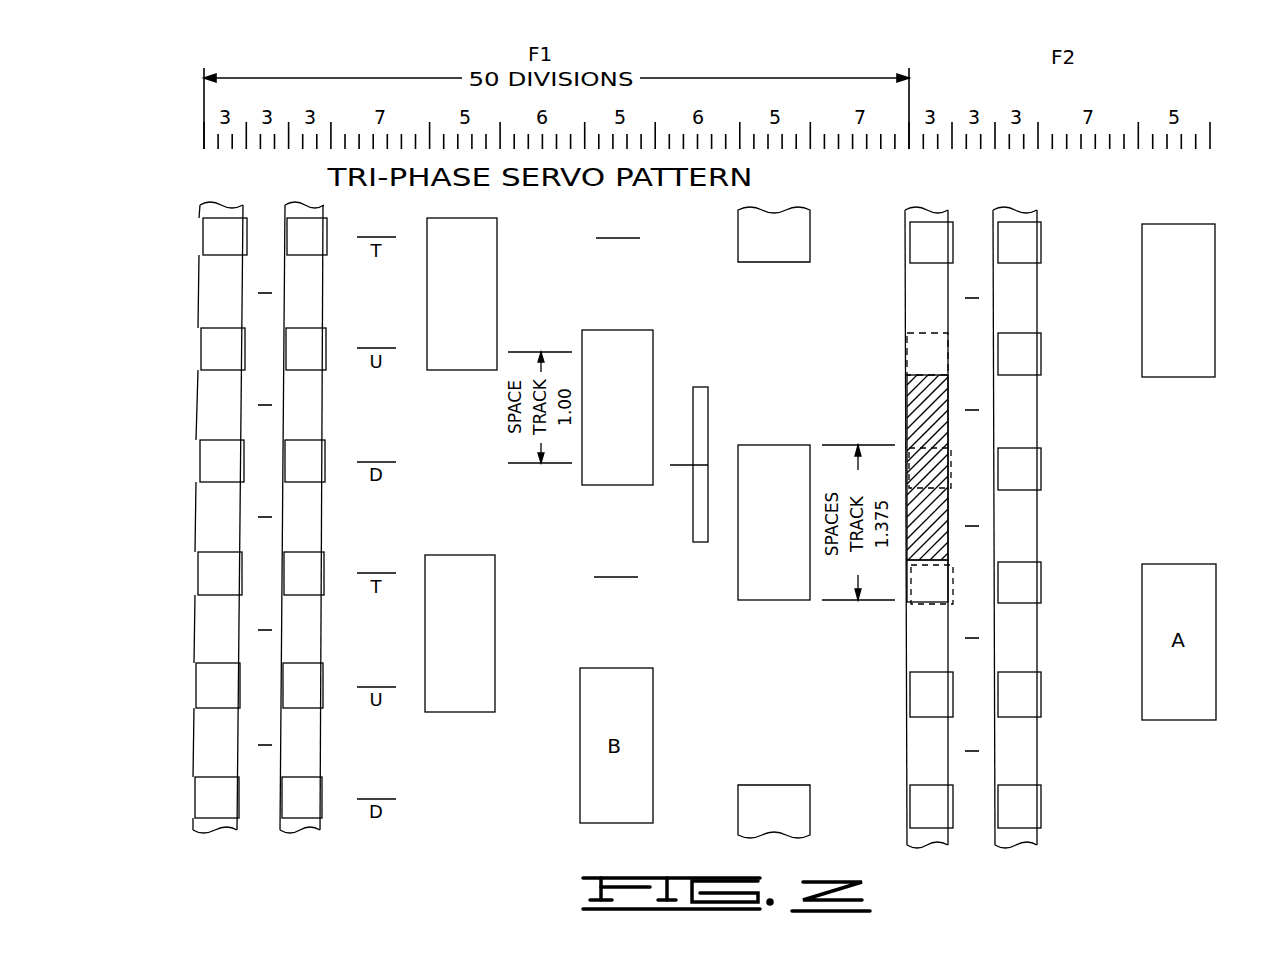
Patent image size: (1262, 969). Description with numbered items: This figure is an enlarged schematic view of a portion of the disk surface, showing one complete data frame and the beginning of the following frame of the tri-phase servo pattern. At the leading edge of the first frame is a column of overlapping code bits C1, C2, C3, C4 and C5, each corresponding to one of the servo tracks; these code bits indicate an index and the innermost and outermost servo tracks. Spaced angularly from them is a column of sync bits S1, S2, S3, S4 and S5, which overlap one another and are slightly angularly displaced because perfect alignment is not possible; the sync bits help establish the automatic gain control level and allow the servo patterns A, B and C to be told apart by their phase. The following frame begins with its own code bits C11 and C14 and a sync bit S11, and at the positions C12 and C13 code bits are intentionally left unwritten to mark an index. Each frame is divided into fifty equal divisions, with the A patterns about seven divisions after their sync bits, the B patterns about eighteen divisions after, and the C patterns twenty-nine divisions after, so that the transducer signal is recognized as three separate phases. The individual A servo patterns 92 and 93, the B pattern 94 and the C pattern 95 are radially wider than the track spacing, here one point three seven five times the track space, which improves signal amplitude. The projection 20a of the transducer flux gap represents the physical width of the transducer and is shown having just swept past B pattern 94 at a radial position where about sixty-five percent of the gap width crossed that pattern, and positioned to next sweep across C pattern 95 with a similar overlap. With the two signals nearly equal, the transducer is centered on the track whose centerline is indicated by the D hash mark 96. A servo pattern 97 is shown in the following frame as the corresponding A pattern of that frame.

The code bit C1 is at (221, 285).
The code bit C2 is at (220, 398).
The code bit C3 is at (218, 511).
The code bit C4 is at (217, 625).
The code bit C5 is at (216, 739).
The sync bit S1 is at (306, 296).
The sync bit S2 is at (305, 407).
The sync bit S3 is at (305, 524).
The sync bit S4 is at (305, 637).
The sync bit S5 is at (305, 753).
The code bit C11 is at (928, 291).
The code bit location C12 is at (928, 400).
The code bit location C13 is at (933, 512).
The code bit C14 is at (930, 642).
The sync bit S11 is at (1020, 286).
The A servo pattern 92 is at (478, 372).
The A servo pattern 93 is at (473, 553).
The B pattern 94 is at (610, 487).
The C pattern 95 is at (772, 602).
The D hash mark 96 is at (683, 467).
The servo burst A of second frame 97 is at (1193, 380).
The projection of the flux gap of the transducer 20a is at (708, 403).